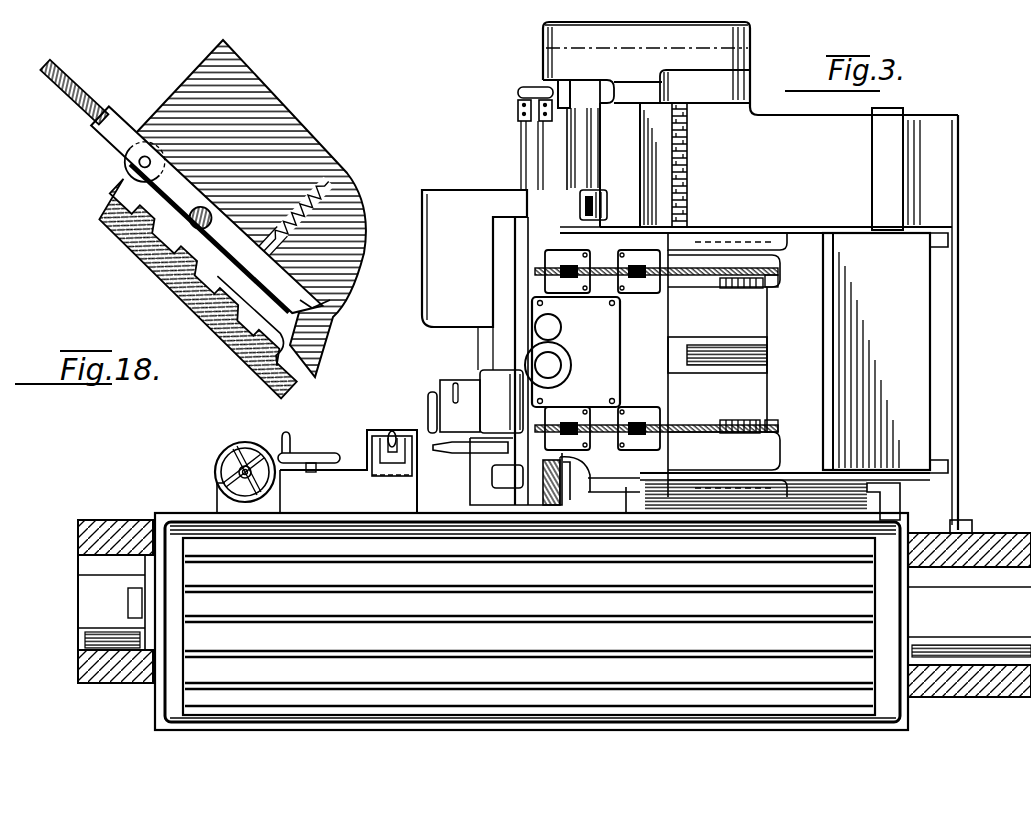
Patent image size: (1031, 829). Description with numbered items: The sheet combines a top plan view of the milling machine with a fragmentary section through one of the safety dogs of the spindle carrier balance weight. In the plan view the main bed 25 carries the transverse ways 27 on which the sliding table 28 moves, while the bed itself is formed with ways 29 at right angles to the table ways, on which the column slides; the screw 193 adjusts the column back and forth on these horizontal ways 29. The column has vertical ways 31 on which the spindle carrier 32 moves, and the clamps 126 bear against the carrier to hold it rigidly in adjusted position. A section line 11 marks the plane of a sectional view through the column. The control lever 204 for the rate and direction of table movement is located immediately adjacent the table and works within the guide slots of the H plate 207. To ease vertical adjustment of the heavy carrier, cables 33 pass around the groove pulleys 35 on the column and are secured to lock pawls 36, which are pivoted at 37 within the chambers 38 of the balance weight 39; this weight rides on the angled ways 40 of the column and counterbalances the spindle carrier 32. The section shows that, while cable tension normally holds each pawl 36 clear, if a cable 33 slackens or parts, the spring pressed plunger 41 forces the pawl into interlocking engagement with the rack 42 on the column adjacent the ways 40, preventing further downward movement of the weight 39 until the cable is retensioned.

In FIG. 3, the section line 11 is at (535, 60).
In FIG. 3, the main bed 25 is at (947, 181).
In FIG. 3, the ways 27 is at (987, 543).
In FIG. 3, the sliding table 28 is at (890, 721).
In FIG. 3, the ways 29 is at (890, 152).
In FIG. 3, the vertical ways 31 is at (588, 186).
In FIG. 3, the spindle carrier 32 is at (508, 347).
In FIG. 18, the cables 33 is at (80, 88).
In FIG. 3, the cables 33 is at (678, 277).
In FIG. 3, the groove pulleys 35 is at (578, 287).
In FIG. 18, the lock pawls 36 is at (157, 188).
In FIG. 3, the lock pawls 36 is at (748, 392).
In FIG. 18, the pivot 37 is at (207, 212).
In FIG. 18, the chambers 38 is at (312, 307).
In FIG. 18, the balance weight 39 is at (340, 213).
In FIG. 3, the balance weight 39 is at (902, 290).
In FIG. 3, the angled ways 40 is at (942, 248).
In FIG. 18, the spring pressed plunger 41 is at (365, 278).
In FIG. 18, the rack 42 is at (247, 337).
In FIG. 3, the rack 42 is at (738, 288).
In FIG. 3, the clamps 126 is at (594, 202).
In FIG. 3, the screw 193 is at (687, 152).
In FIG. 3, the control lever 204 is at (403, 425).
In FIG. 3, the H plate 207 is at (375, 434).